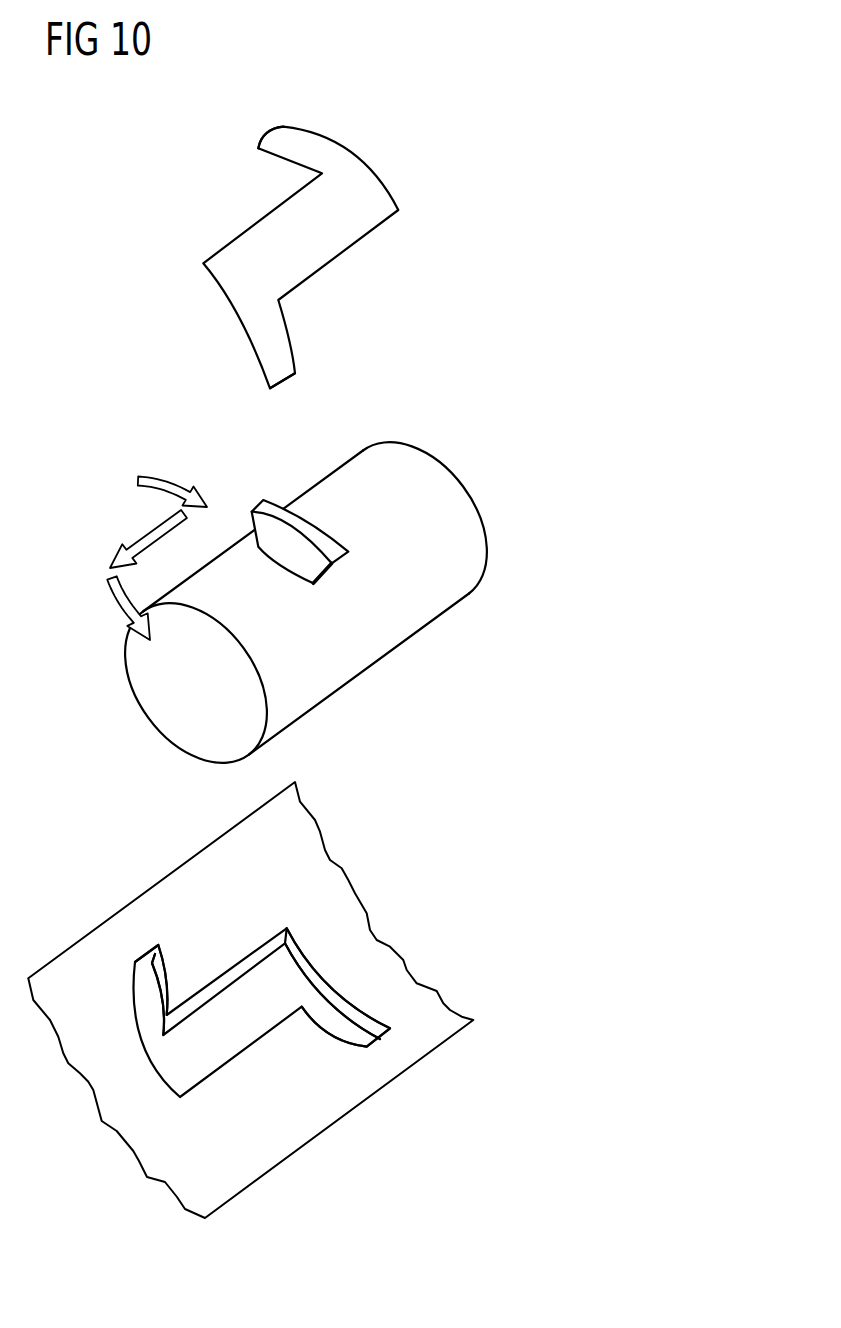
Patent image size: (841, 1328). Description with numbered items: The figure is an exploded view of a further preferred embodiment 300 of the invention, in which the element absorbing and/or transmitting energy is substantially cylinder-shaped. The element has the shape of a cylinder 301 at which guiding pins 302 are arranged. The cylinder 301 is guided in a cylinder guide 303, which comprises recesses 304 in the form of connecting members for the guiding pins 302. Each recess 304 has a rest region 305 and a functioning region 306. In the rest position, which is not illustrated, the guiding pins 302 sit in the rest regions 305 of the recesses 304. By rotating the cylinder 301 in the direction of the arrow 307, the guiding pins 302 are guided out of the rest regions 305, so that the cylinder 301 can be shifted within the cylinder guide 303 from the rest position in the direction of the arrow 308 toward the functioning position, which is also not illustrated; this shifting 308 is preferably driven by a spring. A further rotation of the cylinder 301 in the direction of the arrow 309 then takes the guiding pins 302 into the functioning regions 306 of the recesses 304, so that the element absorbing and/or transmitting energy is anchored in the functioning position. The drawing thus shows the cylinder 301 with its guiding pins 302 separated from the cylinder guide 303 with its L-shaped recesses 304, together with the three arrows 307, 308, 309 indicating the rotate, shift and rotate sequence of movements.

The further preferred embodiment 300 is at (492, 180).
The cylinder 301 is at (443, 490).
The guiding pins 302 is at (328, 540).
The cylinder guide 303 is at (214, 860).
The recesses 304 is at (283, 238).
The rest regions 305 is at (282, 140).
The functioning regions 306 is at (285, 353).
The arrow 307 is at (162, 477).
The arrow 308 is at (145, 540).
The arrow 309 is at (123, 600).